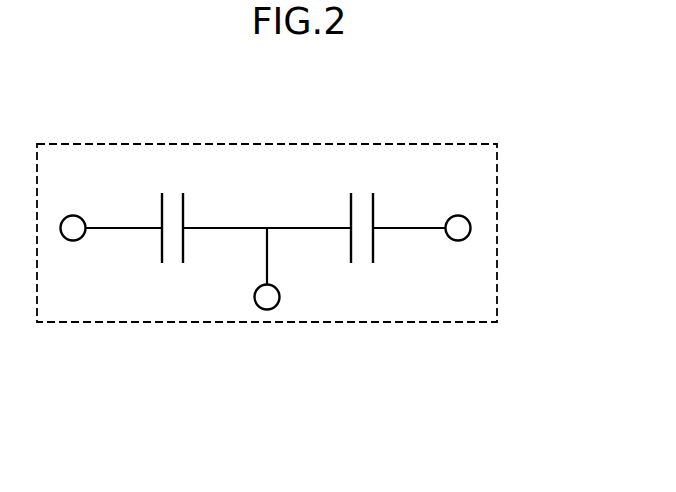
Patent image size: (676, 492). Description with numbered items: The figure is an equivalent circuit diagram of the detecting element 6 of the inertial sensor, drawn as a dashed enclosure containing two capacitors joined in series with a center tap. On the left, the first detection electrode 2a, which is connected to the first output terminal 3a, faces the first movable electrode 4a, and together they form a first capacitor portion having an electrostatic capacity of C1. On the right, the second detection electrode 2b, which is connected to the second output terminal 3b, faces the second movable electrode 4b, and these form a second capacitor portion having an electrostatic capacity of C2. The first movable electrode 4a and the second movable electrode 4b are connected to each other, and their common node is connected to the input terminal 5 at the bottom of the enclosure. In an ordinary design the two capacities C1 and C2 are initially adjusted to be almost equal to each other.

The first detection electrode 2a is at (160, 197).
The first movable electrode 4a is at (184, 197).
The second movable electrode 4b is at (350, 197).
The second detection electrode 2b is at (374, 197).
The first output terminal 3a is at (73, 241).
The second output terminal 3b is at (460, 241).
The input terminal 5 is at (275, 308).
The detecting element 6 is at (497, 208).